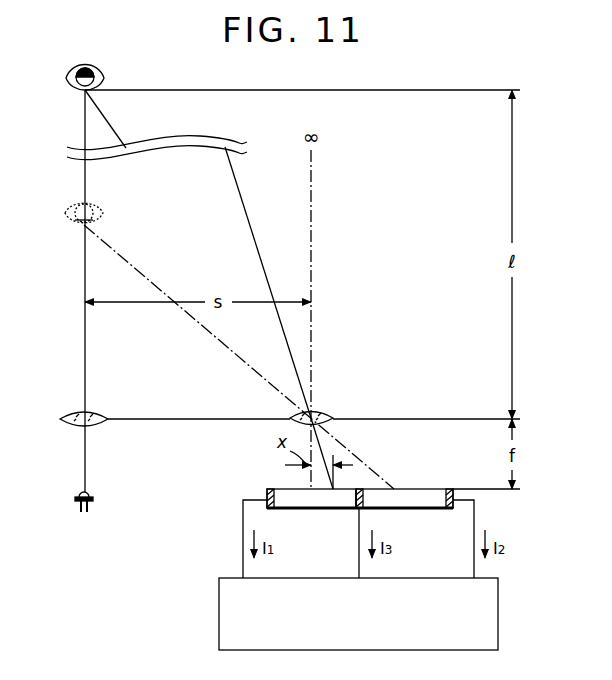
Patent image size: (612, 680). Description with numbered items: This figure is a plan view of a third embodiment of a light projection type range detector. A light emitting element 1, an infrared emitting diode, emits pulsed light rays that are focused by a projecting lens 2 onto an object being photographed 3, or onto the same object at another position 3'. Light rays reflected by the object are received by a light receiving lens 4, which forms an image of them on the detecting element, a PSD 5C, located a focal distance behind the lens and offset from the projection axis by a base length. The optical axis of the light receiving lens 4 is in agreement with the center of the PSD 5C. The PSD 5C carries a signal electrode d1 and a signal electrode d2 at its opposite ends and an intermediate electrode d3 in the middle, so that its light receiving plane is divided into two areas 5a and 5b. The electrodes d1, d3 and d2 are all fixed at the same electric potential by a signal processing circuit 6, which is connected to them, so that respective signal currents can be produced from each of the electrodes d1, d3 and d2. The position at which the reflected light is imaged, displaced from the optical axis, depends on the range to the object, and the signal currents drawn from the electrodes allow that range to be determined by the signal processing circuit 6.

The light emitting element 1 is at (74, 498).
The projecting lens 2 is at (103, 425).
The object being photographed 3 is at (77, 91).
The object being photographed 3' is at (75, 235).
The light receiving lens 4 is at (327, 413).
The light receiving area 5a is at (283, 494).
The light receiving area 5b is at (428, 493).
The PSD 5C is at (364, 465).
The signal processing circuit 6 is at (487, 640).
The signal electrode d1 is at (276, 508).
The signal electrode d2 is at (449, 508).
The intermediate electrode d3 is at (356, 508).